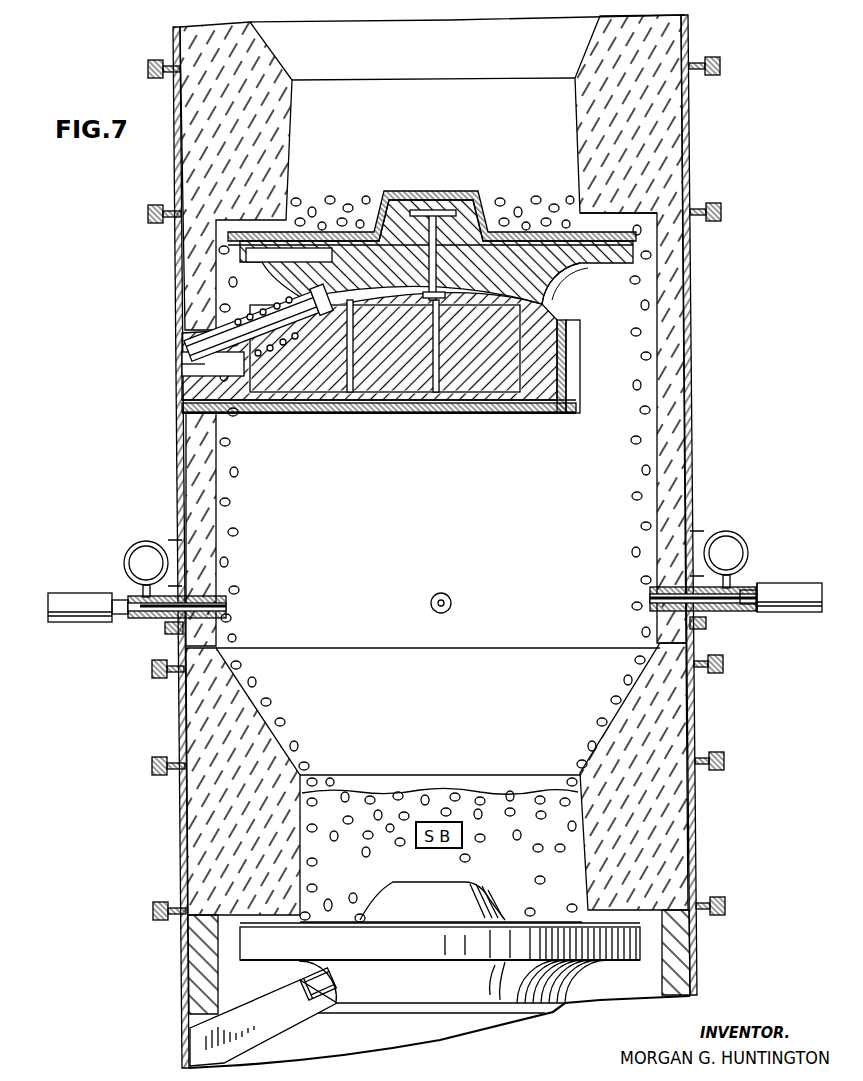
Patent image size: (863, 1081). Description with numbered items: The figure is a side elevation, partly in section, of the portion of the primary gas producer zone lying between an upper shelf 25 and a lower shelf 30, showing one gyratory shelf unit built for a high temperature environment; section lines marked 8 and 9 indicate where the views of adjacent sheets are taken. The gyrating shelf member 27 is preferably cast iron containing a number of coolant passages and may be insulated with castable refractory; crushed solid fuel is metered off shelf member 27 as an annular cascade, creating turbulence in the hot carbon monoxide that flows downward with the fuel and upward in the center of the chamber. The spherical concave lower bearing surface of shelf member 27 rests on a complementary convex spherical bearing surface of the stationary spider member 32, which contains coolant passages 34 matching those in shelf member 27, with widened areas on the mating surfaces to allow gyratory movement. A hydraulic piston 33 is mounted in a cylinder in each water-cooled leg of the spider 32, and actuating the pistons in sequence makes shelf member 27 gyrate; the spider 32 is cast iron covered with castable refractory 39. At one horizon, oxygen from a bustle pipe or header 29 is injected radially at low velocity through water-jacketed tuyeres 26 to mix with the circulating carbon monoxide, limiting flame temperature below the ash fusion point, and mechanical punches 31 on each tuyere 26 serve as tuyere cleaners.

The shelf 25 is at (447, 190).
The injection tuyeres 26 is at (228, 606).
The gyrating shelf member 27 is at (660, 213).
The bustle pipe or header 29 is at (730, 534).
The shelf 30 is at (460, 882).
The mechanical punches 31 is at (746, 590).
The stationary spider member 32 is at (262, 412).
The hydraulic piston 33 is at (298, 280).
The coolant passages 34 is at (515, 302).
The castable refractory 39 is at (567, 414).
The section line 8 is at (136, 236).
The section line 9 is at (118, 395).